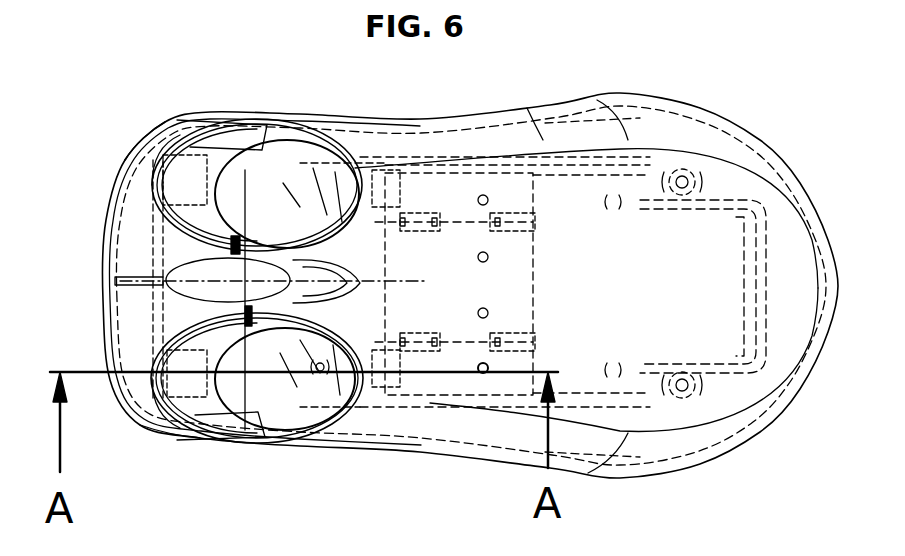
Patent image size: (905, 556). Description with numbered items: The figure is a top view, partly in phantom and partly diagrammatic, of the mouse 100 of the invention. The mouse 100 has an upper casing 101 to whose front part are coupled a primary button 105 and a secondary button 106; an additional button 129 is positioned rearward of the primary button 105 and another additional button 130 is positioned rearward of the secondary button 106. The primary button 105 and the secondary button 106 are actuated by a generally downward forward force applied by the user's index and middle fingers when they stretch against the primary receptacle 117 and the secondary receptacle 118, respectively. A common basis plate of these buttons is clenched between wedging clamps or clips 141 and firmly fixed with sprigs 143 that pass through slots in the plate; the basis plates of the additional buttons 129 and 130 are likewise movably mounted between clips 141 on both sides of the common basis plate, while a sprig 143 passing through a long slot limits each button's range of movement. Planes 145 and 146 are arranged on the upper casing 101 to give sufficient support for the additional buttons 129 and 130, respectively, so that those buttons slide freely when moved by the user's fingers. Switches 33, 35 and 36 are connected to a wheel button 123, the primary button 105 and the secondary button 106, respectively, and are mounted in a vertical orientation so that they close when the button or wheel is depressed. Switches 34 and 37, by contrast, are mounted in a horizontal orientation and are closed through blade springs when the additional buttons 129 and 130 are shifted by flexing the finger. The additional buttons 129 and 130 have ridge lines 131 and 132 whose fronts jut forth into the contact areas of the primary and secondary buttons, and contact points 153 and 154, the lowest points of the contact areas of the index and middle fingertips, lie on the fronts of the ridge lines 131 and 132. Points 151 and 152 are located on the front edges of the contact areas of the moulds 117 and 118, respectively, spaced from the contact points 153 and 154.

The mouse 100 is at (680, 76).
The upper casing 101 is at (527, 108).
The primary button 105 is at (137, 313).
The secondary button 106 is at (135, 178).
The primary receptacle 117 is at (175, 428).
The secondary receptacle 118 is at (147, 135).
The wheel button 123 is at (220, 277).
The additional button 129 is at (335, 418).
The additional button 130 is at (338, 178).
The ridge line 131 is at (235, 415).
The ridge line 132 is at (236, 158).
The switch 33 is at (216, 225).
The switch 34 is at (400, 387).
The switch 35 is at (185, 380).
The switch 36 is at (190, 160).
The switch 37 is at (428, 372).
The wedging clamps or clips 141 is at (430, 374).
The sprigs 143 is at (487, 372).
The plane 145 is at (314, 437).
The plane 146 is at (320, 137).
The point 151 is at (150, 362).
The point 152 is at (160, 193).
The contact point 153 is at (225, 395).
The contact point 154 is at (221, 215).